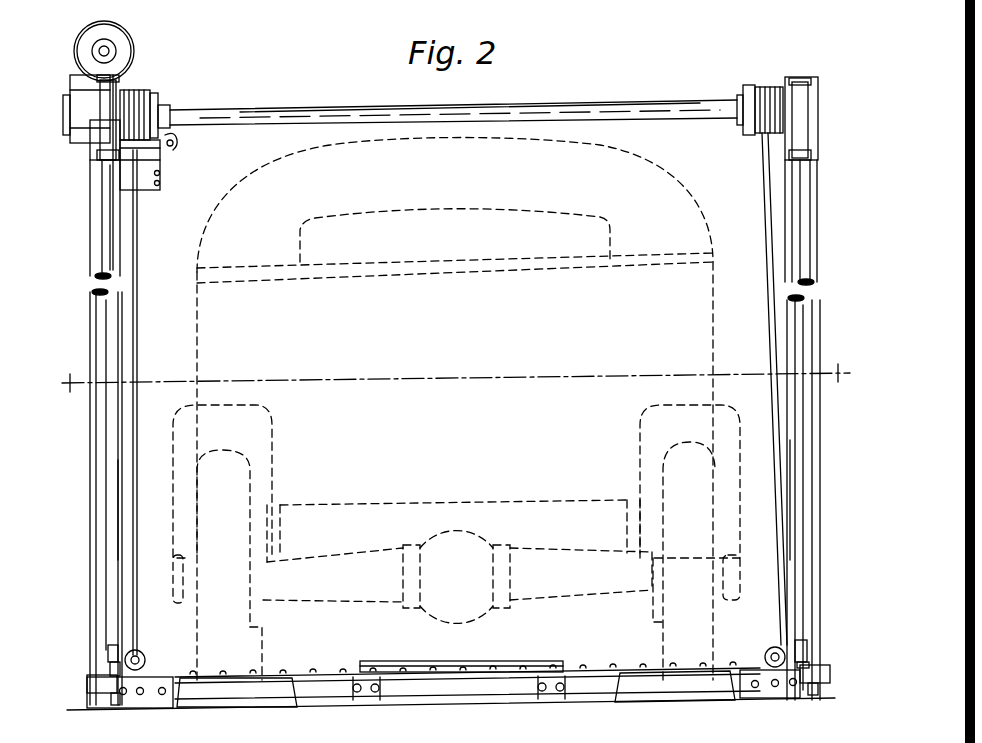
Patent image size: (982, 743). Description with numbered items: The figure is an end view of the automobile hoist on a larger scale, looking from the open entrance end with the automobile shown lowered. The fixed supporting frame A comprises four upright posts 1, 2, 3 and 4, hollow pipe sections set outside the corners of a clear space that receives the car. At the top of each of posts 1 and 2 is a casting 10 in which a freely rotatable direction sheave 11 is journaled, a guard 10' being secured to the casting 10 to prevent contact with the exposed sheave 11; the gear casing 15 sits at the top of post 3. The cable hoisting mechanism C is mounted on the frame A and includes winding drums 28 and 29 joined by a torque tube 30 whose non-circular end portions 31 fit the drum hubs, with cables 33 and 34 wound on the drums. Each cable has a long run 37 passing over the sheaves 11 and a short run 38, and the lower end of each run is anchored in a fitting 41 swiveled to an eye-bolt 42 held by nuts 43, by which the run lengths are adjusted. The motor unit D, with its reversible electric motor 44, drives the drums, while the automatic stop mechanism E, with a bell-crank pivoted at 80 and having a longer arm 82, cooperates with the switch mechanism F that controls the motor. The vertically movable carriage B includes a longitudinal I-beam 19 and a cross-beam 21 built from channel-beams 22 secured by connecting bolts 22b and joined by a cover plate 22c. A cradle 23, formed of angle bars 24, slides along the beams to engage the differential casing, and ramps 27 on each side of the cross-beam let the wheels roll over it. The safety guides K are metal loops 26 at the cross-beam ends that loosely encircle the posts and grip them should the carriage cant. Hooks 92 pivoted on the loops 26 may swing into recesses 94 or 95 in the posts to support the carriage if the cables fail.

The upright post 1 is at (92, 274).
The upright post 2 is at (812, 298).
The upright post 3 is at (108, 428).
The upright post 4 is at (452, 378).
The casting 10 is at (452, 146).
The guard 10' is at (448, 109).
The direction sheave 11 is at (108, 140).
The gear casing 15 is at (77, 70).
The longitudinally extending I-beam 19 is at (546, 700).
The cross-beam 21 is at (524, 705).
The channel-beam 22 is at (580, 700).
The connecting bolt 22b is at (162, 706).
The cover plate 22c is at (582, 668).
The cradle 23 is at (515, 661).
The angle bar 24 is at (546, 661).
The metal loop 26 is at (88, 686).
The ramp 27 is at (272, 693).
The winding drum 28 is at (157, 108).
The winding drum 29 is at (750, 87).
The torque tube 30 is at (275, 111).
The non-circular end portion 31 is at (168, 115).
The cable 33 is at (135, 97).
The cable 34 is at (767, 88).
The long run 37 is at (806, 355).
The short run 38 is at (140, 285).
The fitting 41 is at (118, 660).
The eye-bolt 42 is at (112, 690).
The nut 43 is at (116, 704).
The reversible electric motor 44 is at (78, 38).
The pivot 80 is at (178, 146).
The longer arm of the bell-crank 82 is at (160, 178).
The hook 92 is at (140, 652).
The slot or recess 94 is at (138, 230).
The recess 95 is at (122, 470).
The fixed supporting frame A is at (92, 318).
The vertically movable carriage B is at (444, 703).
The cable hoisting mechanism C is at (253, 106).
The motor unit D is at (133, 78).
The automatic stop mechanism E is at (160, 150).
The switch mechanism F is at (160, 193).
The safety guide K is at (86, 674).